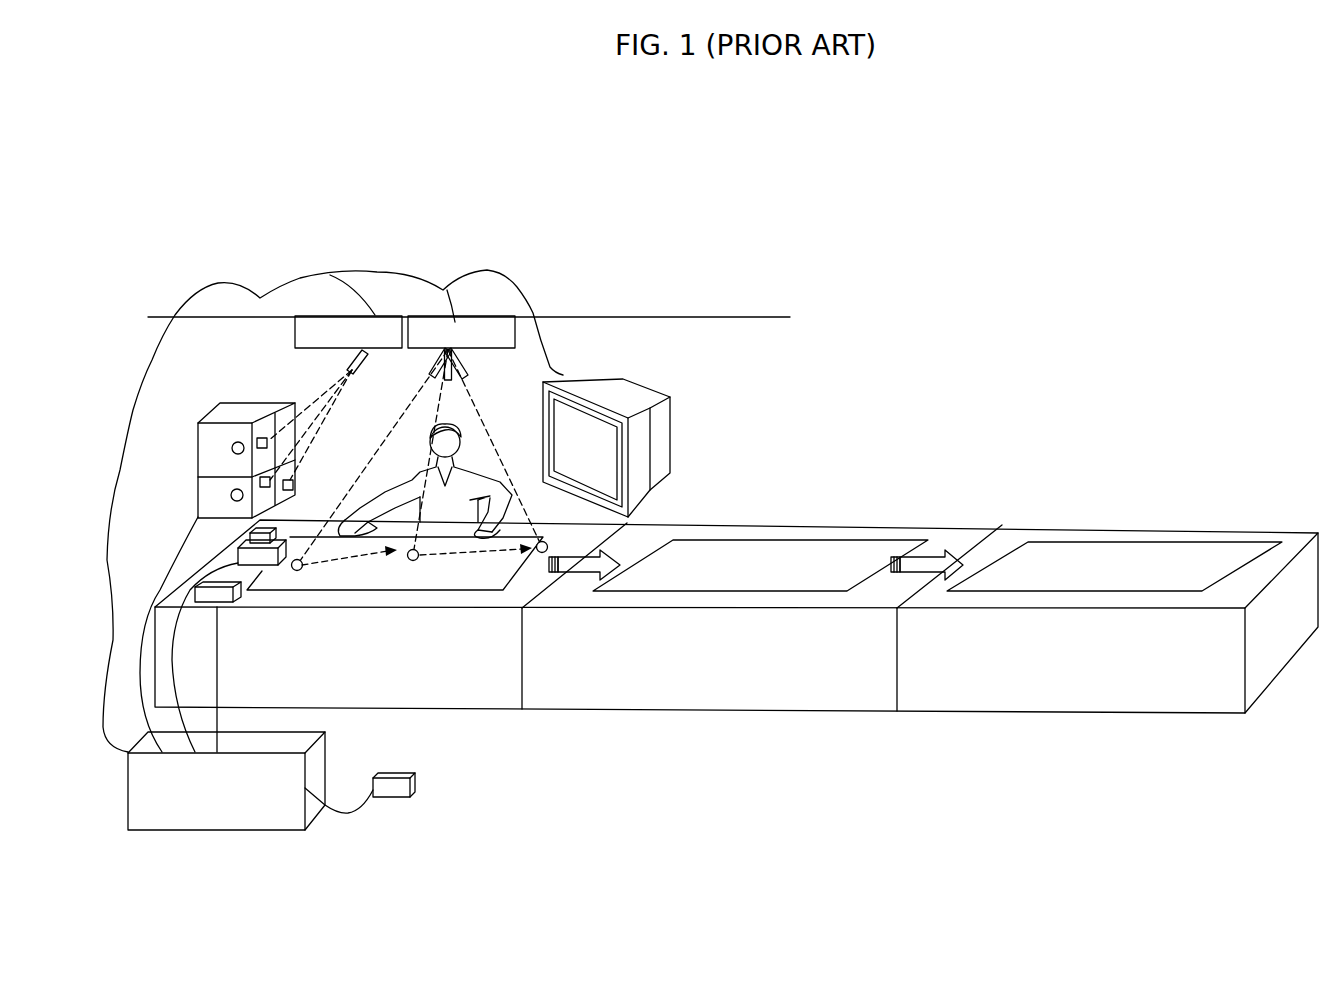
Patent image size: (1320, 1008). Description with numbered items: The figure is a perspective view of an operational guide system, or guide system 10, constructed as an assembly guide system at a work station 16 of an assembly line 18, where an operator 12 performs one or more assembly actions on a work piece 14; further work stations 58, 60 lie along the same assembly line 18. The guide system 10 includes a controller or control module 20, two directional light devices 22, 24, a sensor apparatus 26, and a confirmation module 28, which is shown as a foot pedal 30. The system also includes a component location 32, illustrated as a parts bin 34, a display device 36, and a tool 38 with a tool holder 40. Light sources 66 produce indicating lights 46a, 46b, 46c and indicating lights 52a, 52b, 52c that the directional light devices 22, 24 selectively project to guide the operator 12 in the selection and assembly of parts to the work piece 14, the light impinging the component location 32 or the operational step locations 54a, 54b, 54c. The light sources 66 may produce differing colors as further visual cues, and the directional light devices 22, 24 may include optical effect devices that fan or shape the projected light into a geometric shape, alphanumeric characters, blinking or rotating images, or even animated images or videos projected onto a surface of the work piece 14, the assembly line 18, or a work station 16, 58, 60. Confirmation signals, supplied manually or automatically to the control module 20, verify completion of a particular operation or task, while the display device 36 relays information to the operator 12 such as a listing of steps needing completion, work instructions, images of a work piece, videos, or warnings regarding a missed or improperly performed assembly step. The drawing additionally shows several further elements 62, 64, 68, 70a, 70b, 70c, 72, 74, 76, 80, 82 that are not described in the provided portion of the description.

The operational guide system 10 is at (278, 220).
The operator 12 is at (463, 441).
The work piece 14 is at (492, 586).
The work station 16 is at (364, 697).
The assembly line 18 is at (866, 718).
The control module 20 is at (227, 812).
The directional light device 22 is at (312, 333).
The directional light device 24 is at (497, 340).
The sensor apparatus 26 is at (217, 597).
The confirmation module 28 is at (400, 799).
The foot pedal 30 is at (395, 787).
The component location 32 is at (215, 404).
The parts bin 34 is at (195, 445).
The display device 36 is at (663, 452).
The tool 38 is at (272, 528).
The tool holder 40 is at (262, 558).
The indicating light 46a is at (315, 401).
The indicating light 46b is at (327, 415).
The indicating light 46c is at (310, 432).
The indicating light 52a is at (356, 483).
The indicating light 52b is at (440, 395).
The indicating light 52c is at (518, 497).
The operational step location 54a is at (302, 569).
The operational step location 54b is at (414, 561).
The operational step location 54c is at (540, 553).
The work station 58 is at (794, 703).
The work station 60 is at (1160, 703).
The conveyor cable 62 is at (219, 722).
The work cell boundary 64 is at (128, 412).
The light source 66 is at (432, 362).
The overhead support 68 is at (760, 317).
The indicator 70a is at (222, 432).
The indicator 70b is at (213, 497).
The indicator 70c is at (292, 486).
The control buttons 72 is at (232, 449).
The cabinet cable 74 is at (183, 553).
The device cable 76 is at (348, 815).
The work cell envelope 80 is at (517, 287).
The fixture cable 82 is at (176, 675).